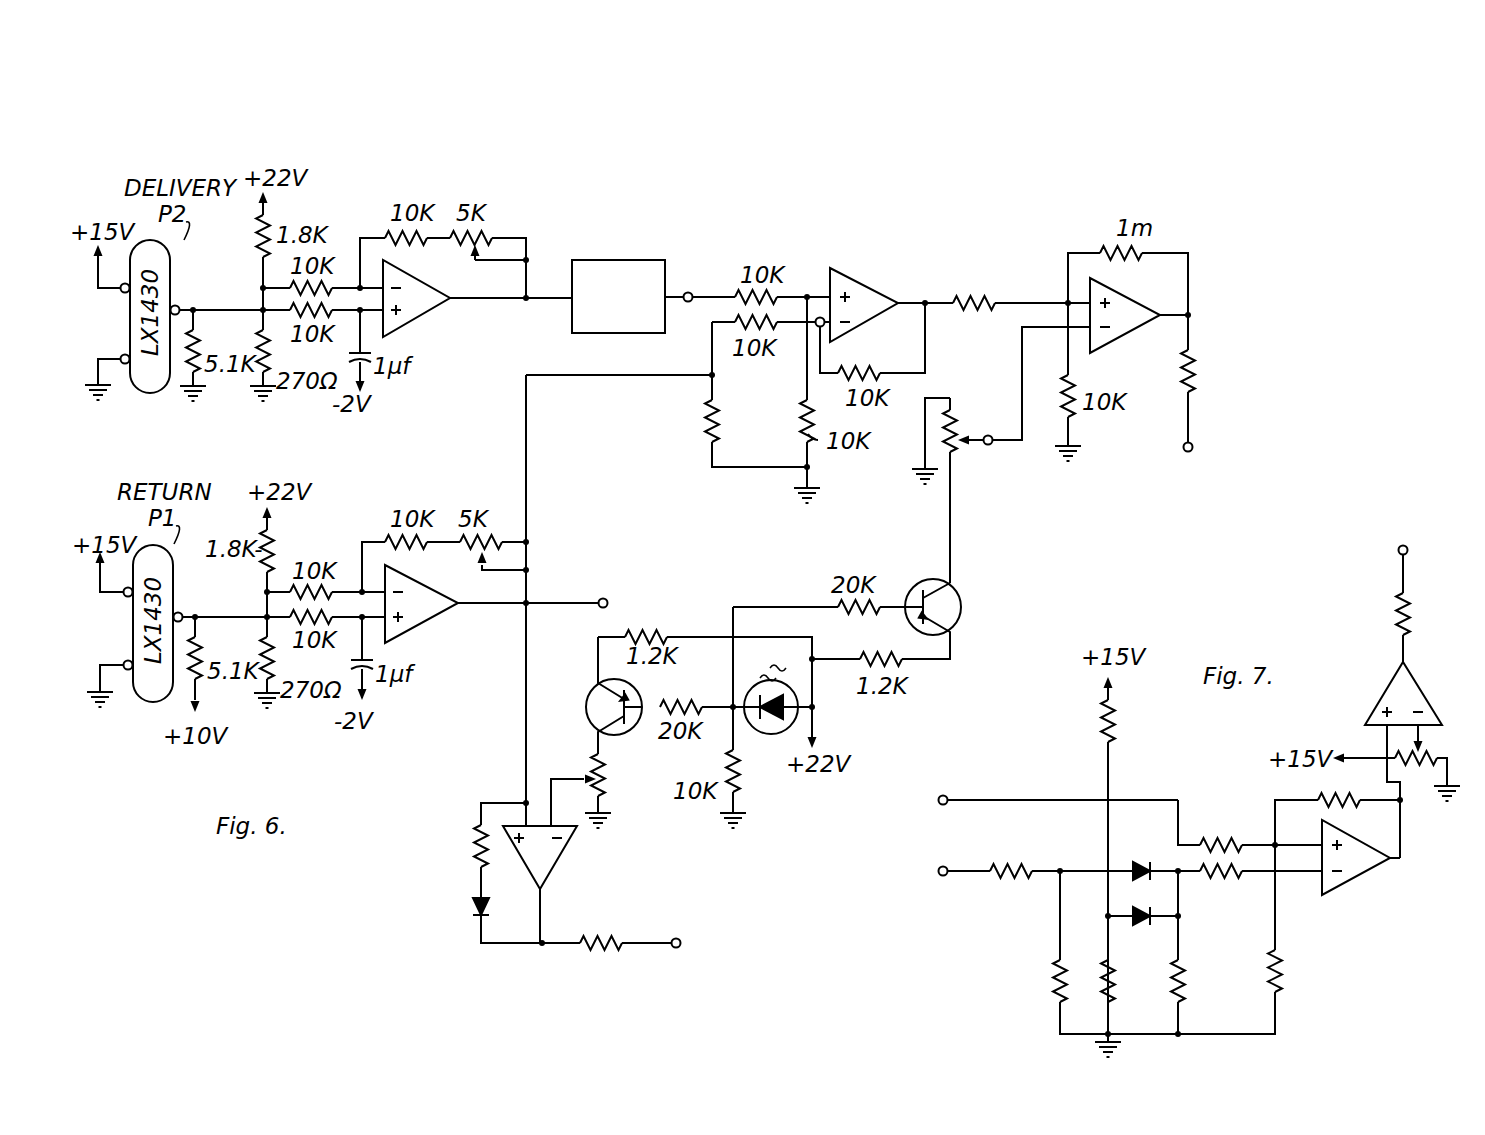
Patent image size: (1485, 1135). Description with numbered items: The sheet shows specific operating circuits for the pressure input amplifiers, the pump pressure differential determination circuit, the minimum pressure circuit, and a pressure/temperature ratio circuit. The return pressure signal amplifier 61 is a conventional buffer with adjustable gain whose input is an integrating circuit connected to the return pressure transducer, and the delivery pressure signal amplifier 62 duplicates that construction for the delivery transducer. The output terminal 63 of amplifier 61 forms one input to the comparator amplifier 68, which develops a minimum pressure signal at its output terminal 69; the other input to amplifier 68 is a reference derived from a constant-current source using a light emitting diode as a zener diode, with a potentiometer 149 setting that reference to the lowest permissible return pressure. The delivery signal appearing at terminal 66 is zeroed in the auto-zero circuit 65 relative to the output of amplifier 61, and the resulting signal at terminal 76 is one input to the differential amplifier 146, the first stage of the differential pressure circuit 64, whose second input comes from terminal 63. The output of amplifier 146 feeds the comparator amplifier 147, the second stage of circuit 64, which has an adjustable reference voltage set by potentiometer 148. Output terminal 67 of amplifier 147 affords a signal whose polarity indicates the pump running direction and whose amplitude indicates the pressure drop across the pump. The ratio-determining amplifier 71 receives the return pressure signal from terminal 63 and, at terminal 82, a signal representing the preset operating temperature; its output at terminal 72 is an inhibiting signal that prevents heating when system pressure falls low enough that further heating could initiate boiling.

In FIG. 6, the return pressure signal amplifier 61 is at (410, 636).
In FIG. 6, the delivery pressure signal amplifier 62 is at (420, 330).
In FIG. 6, the output terminal of return pressure amplifier 63 is at (607, 600).
In FIG. 7, the output terminal of return pressure amplifier 63 is at (938, 871).
In FIG. 6, the differential pressure circuit 64 is at (1022, 261).
In FIG. 6, the auto-zero circuit 65 is at (577, 260).
In FIG. 6, the output terminal of delivery pressure amplifier 66 is at (524, 304).
In FIG. 6, the output terminal of differential pressure circuit 67 is at (1192, 444).
In FIG. 6, the minimum pressure comparator amplifier 68 is at (507, 786).
In FIG. 6, the minimum pressure output terminal 69 is at (681, 943).
In FIG. 7, the ΔP/T ratio-determining amplifier 71 is at (1210, 790).
In FIG. 7, the output terminal of ratio circuit 72 is at (1398, 557).
In FIG. 6, the auto-zero output terminal 76 is at (696, 284).
In FIG. 7, the preset temperature input terminal 82 is at (938, 800).
In FIG. 6, the differential amplifier 146 is at (854, 268).
In FIG. 6, the comparator amplifier 147 is at (1166, 292).
In FIG. 6, the potentiometer 148 is at (958, 430).
In FIG. 6, the potentiometer 149 is at (590, 776).